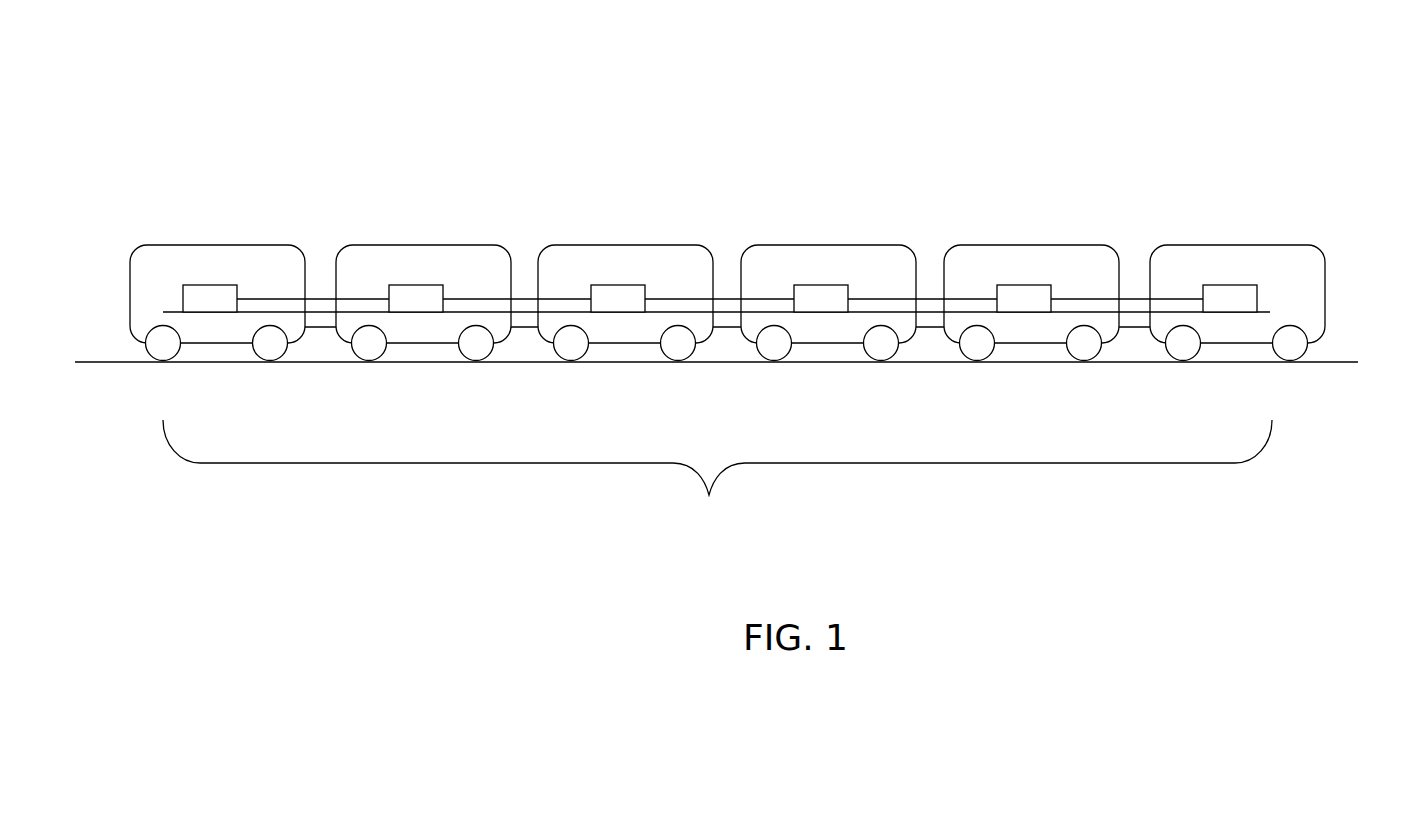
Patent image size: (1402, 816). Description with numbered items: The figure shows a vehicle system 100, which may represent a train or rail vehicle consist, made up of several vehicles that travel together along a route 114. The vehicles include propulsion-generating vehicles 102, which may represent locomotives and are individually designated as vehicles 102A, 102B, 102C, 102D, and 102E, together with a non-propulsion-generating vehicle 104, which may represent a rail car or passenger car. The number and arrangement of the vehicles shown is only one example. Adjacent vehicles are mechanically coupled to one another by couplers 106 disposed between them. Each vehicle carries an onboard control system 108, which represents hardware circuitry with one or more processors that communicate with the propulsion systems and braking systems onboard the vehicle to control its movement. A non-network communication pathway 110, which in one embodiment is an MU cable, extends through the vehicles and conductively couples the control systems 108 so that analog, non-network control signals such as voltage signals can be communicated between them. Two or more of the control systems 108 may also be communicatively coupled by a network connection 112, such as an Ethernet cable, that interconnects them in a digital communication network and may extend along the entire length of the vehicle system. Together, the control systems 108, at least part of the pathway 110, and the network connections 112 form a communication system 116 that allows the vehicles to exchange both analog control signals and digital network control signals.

The vehicle system 100 is at (1303, 128).
The propulsion-generating vehicle 102 is at (152, 230).
The propulsion-generating vehicle 102A is at (232, 245).
The non-propulsion-generating vehicle 104 is at (423, 245).
The propulsion-generating vehicle 102B is at (625, 296).
The propulsion-generating vehicle 102C is at (837, 243).
The propulsion-generating vehicle 102D is at (1030, 243).
The propulsion-generating vehicle 102E is at (1245, 243).
The coupler 106 is at (1135, 328).
The control system 108 is at (618, 303).
The non-network communication pathway 110 is at (952, 313).
The network connection 112 is at (720, 298).
The route 114 is at (1337, 365).
The communication system 116 is at (710, 497).